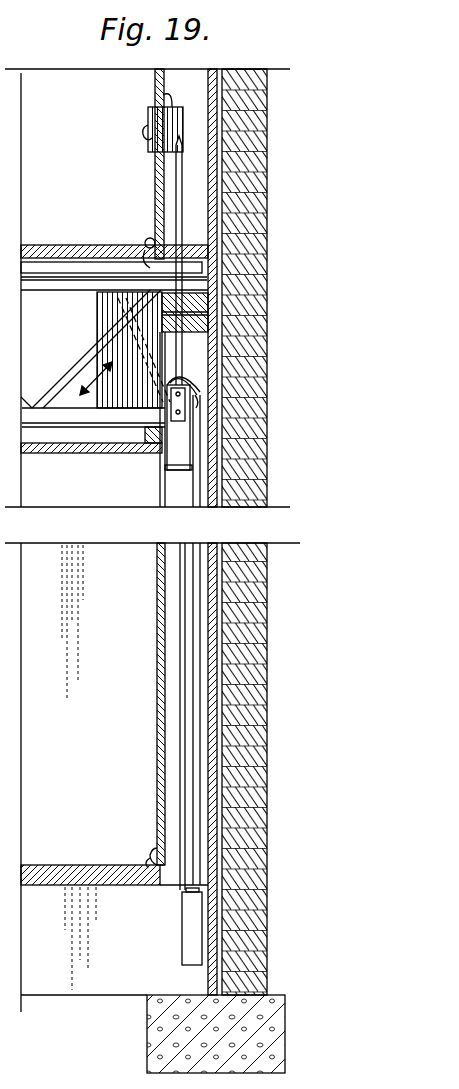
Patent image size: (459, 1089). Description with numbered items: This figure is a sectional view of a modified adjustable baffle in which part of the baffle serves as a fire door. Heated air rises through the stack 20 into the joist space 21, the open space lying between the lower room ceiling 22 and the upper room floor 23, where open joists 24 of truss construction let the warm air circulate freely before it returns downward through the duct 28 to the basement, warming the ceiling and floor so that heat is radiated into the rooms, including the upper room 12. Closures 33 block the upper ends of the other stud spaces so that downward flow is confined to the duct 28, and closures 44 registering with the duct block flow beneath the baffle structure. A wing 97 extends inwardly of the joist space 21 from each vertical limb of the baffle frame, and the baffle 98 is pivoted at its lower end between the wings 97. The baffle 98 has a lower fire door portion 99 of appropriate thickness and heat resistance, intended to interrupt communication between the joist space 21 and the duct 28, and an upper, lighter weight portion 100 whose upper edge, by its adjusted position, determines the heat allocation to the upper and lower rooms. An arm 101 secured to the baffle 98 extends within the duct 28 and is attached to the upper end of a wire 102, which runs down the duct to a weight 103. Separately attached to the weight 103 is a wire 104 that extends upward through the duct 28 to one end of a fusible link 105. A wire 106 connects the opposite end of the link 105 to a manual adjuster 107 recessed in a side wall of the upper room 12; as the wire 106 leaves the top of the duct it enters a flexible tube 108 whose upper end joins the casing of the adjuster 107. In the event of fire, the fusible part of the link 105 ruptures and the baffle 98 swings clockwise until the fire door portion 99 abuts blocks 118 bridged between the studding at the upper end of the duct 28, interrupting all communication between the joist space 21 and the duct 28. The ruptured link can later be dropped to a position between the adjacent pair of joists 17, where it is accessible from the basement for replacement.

The upper room 12 is at (46, 103).
The joists 17 is at (53, 997).
The stack 20 is at (76, 175).
The joist space 21 is at (38, 328).
The lower room ceiling 22 is at (70, 453).
The upper room floor 23 is at (55, 245).
The open joists 24 is at (56, 393).
The duct 28 is at (161, 598).
The closures 33 is at (270, 407).
The closures 44 is at (145, 432).
The wing 97 is at (97, 302).
The baffle 98 is at (110, 310).
The fire door portion 99 is at (150, 364).
The upper portion 100 is at (125, 268).
The arm 101 is at (185, 378).
The wire 102 is at (195, 480).
The weight 103 is at (185, 930).
The wire 104 is at (183, 668).
The fusible link 105 is at (168, 475).
The wire 106 is at (183, 347).
The manual adjuster 107 is at (163, 95).
The flexible tube 108 is at (182, 224).
The blocks 118 is at (215, 302).